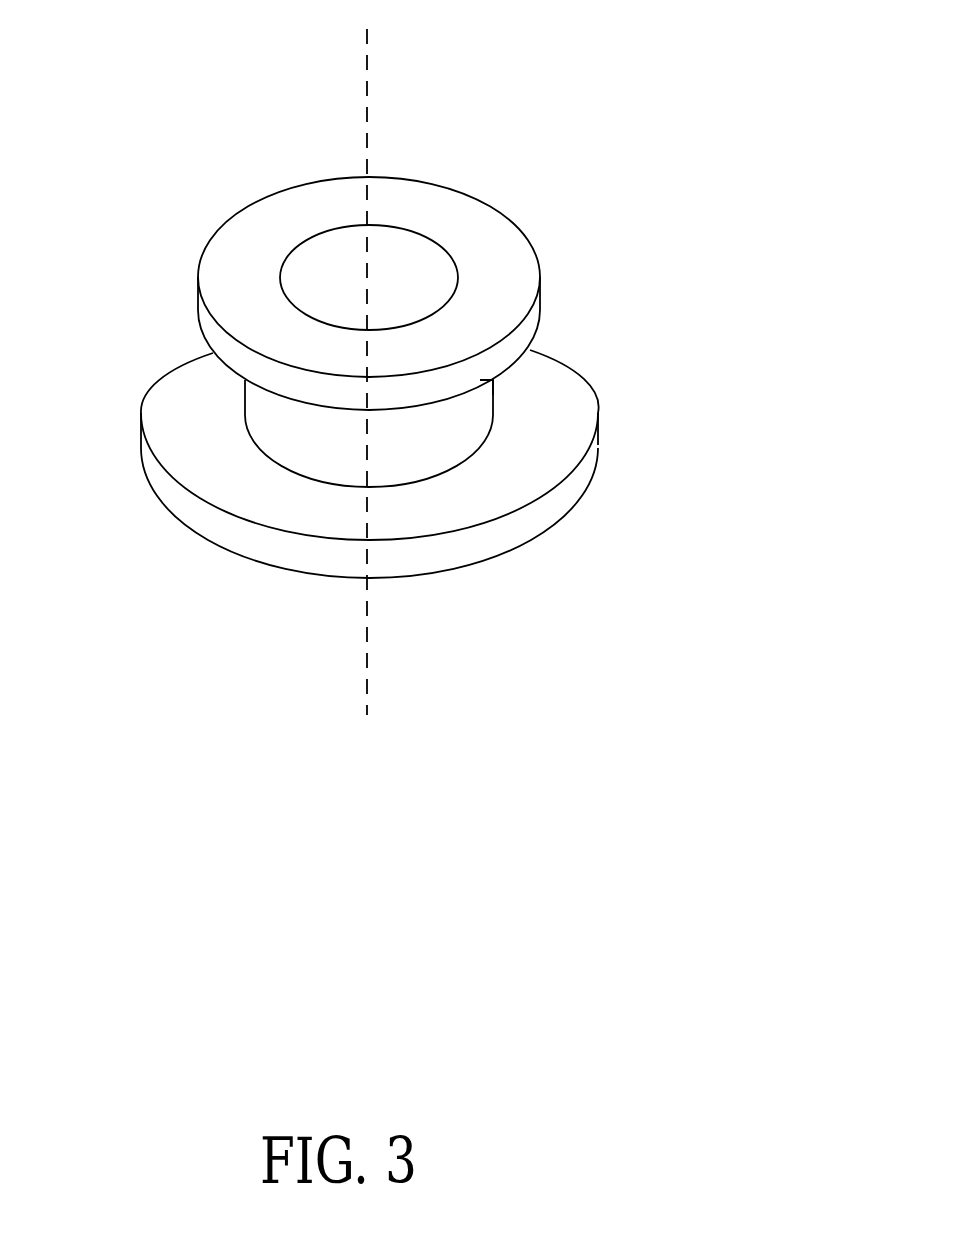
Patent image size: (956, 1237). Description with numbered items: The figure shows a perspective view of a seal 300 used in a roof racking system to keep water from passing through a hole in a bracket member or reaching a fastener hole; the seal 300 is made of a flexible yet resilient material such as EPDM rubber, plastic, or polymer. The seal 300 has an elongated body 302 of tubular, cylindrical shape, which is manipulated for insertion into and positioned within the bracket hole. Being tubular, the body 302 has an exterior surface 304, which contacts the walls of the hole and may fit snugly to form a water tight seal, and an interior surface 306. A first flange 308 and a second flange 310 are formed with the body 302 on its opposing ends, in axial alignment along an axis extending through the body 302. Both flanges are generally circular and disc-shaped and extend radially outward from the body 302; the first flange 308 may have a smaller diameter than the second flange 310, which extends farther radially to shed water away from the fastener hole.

The seal 300 is at (605, 45).
The elongated body 302 is at (508, 382).
The exterior surface 304 is at (255, 399).
The interior surface 306 is at (455, 262).
The first flange 308 is at (540, 293).
The second flange 310 is at (598, 433).